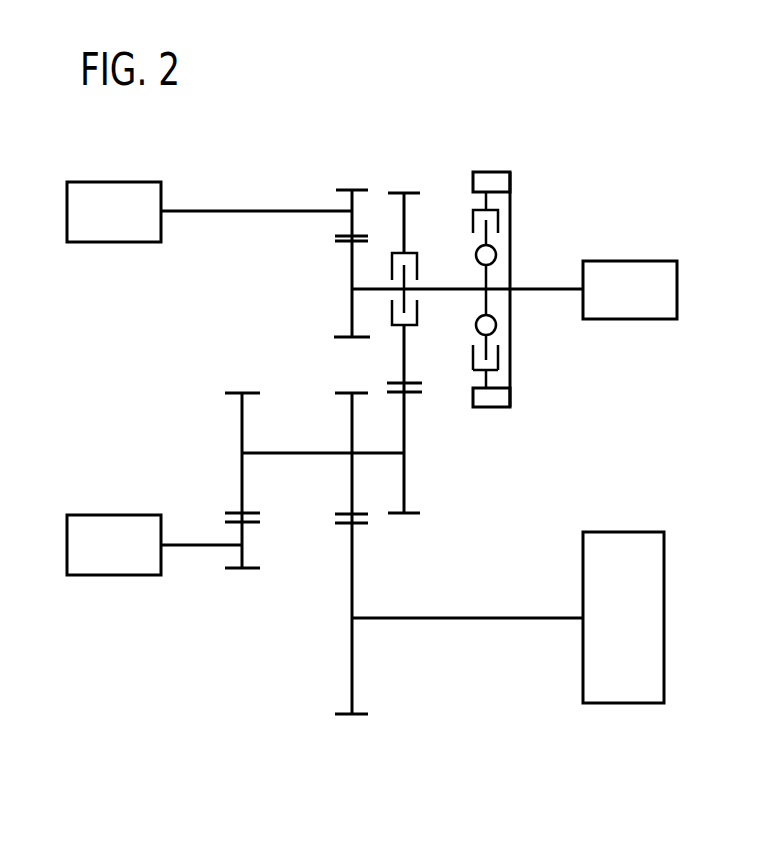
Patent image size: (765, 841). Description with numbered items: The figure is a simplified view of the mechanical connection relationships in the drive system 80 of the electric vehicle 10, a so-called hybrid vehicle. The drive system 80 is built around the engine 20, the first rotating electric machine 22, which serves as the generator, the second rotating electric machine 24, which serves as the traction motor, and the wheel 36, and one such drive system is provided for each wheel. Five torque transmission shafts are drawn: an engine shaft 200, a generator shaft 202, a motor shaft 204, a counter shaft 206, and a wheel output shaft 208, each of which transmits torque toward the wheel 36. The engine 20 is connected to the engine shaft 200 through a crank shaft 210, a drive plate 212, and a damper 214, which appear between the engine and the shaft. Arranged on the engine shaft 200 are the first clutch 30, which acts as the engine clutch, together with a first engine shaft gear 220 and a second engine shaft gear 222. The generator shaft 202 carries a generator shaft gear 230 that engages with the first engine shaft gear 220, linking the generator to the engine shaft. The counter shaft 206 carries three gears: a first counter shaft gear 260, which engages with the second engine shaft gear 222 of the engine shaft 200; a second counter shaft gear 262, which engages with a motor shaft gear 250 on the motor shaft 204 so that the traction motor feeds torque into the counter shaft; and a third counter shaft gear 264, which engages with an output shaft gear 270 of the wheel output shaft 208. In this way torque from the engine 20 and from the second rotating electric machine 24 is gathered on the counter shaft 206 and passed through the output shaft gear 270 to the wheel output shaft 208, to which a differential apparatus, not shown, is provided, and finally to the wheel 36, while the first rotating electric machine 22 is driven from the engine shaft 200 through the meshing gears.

The electric vehicle 10 is at (270, 111).
The drive system 80 is at (557, 138).
The engine 20 is at (657, 260).
The first rotating electric machine 22 is at (137, 182).
The second rotating electric machine 24 is at (137, 514).
The wheel 36 is at (632, 531).
The first clutch 30 is at (409, 252).
The engine shaft 200 is at (437, 287).
The generator shaft 202 is at (241, 210).
The motor shaft 204 is at (183, 543).
The counter shaft 206 is at (290, 452).
The wheel output shaft 208 is at (467, 617).
The crank shaft 210 is at (545, 287).
The drive plate 212 is at (512, 207).
The damper 214 is at (472, 208).
The first engine shaft gear 220 is at (341, 334).
The second engine shaft gear 222 is at (397, 192).
The generator shaft gear 230 is at (344, 189).
The motor shaft gear 250 is at (235, 570).
The first counter shaft gear 260 is at (408, 514).
The second counter shaft gear 262 is at (235, 392).
The third counter shaft gear 264 is at (345, 391).
The output shaft gear 270 is at (343, 717).